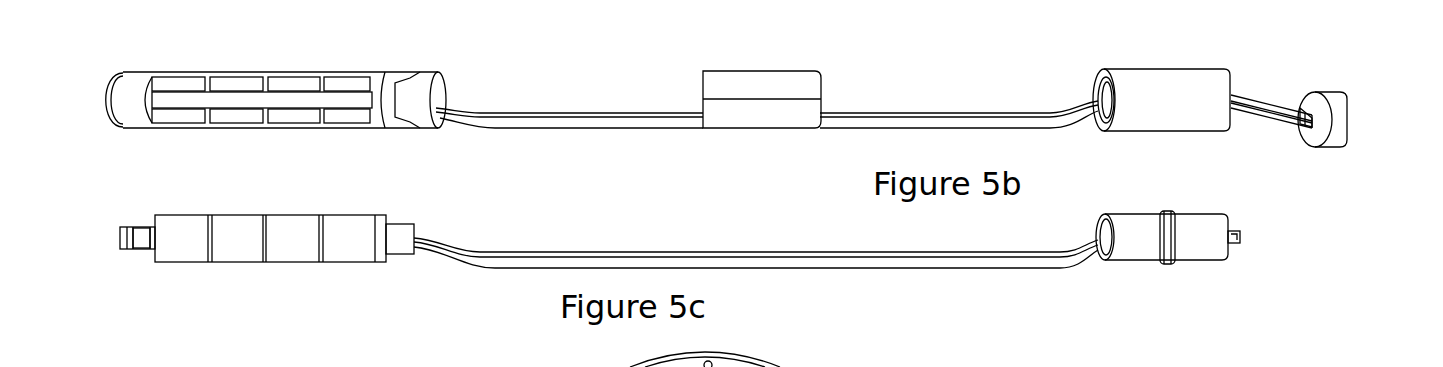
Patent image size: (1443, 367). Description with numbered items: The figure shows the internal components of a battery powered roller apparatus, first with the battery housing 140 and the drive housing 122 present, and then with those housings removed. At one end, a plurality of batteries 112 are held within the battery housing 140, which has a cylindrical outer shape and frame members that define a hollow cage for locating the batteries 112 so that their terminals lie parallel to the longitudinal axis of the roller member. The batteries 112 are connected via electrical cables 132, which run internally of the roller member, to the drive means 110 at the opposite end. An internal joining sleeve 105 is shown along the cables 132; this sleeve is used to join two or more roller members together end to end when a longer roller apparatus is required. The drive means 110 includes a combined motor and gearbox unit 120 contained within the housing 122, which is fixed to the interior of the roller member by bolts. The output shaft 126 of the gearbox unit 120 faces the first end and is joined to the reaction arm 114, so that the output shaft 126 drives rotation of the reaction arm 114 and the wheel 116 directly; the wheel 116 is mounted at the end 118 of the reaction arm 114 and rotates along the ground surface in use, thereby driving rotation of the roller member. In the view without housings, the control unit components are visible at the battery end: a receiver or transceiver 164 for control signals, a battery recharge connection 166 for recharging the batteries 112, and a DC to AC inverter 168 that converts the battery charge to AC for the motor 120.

In FIG. 5B, the internal joining sleeve 105 is at (757, 81).
In FIG. 5C, the drive means 110 is at (1140, 245).
In FIG. 5B, the batteries 112 is at (388, 73).
In FIG. 5C, the batteries 112 is at (343, 228).
In FIG. 5B, the reaction arm 114 is at (1263, 93).
In FIG. 5B, the wheel 116 is at (1340, 118).
In FIG. 5B, the end of the reaction arm 118 is at (1310, 131).
In FIG. 5C, the combined motor and gearbox unit 120 is at (1205, 246).
In FIG. 5B, the housing 122 is at (1168, 108).
In FIG. 5C, the output shaft 126 is at (1238, 243).
In FIG. 5B, the electrical cables 132 is at (622, 123).
In FIG. 5C, the electrical cables 132 is at (888, 262).
In FIG. 5B, the battery housing 140 is at (432, 69).
In FIG. 5C, the receiver or transceiver 164 is at (128, 228).
In FIG. 5C, the battery recharge connection 166 is at (140, 252).
In FIG. 5C, the DC to AC inverter 168 is at (406, 244).